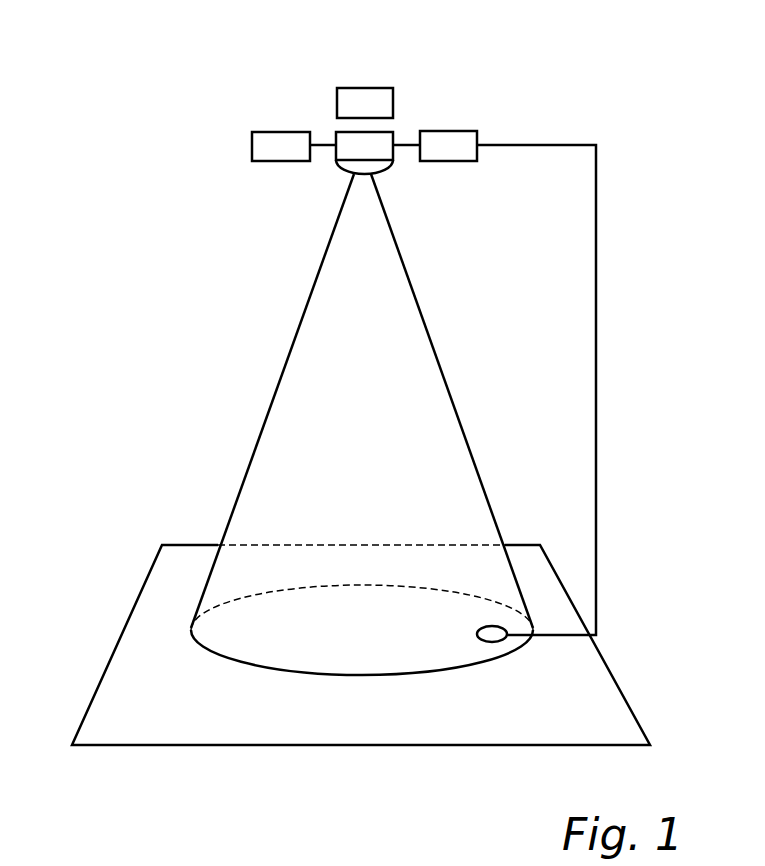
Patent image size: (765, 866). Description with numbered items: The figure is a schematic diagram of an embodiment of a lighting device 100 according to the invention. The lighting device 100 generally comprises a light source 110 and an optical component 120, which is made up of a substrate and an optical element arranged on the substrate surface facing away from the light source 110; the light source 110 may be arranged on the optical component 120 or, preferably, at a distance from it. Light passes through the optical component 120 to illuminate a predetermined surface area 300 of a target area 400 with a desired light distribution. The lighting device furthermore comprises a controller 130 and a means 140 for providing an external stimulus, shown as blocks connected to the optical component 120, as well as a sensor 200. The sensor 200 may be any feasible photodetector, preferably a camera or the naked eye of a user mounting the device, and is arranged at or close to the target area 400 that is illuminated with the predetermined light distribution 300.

The lighting device 100 is at (212, 96).
The light source 110 is at (367, 88).
The optical component 120 is at (395, 153).
The controller 130 is at (478, 136).
The means for providing an external stimulus 140 is at (273, 132).
The sensor 200 is at (500, 643).
The predetermined surface area 300 is at (217, 655).
The target area 400 is at (130, 615).